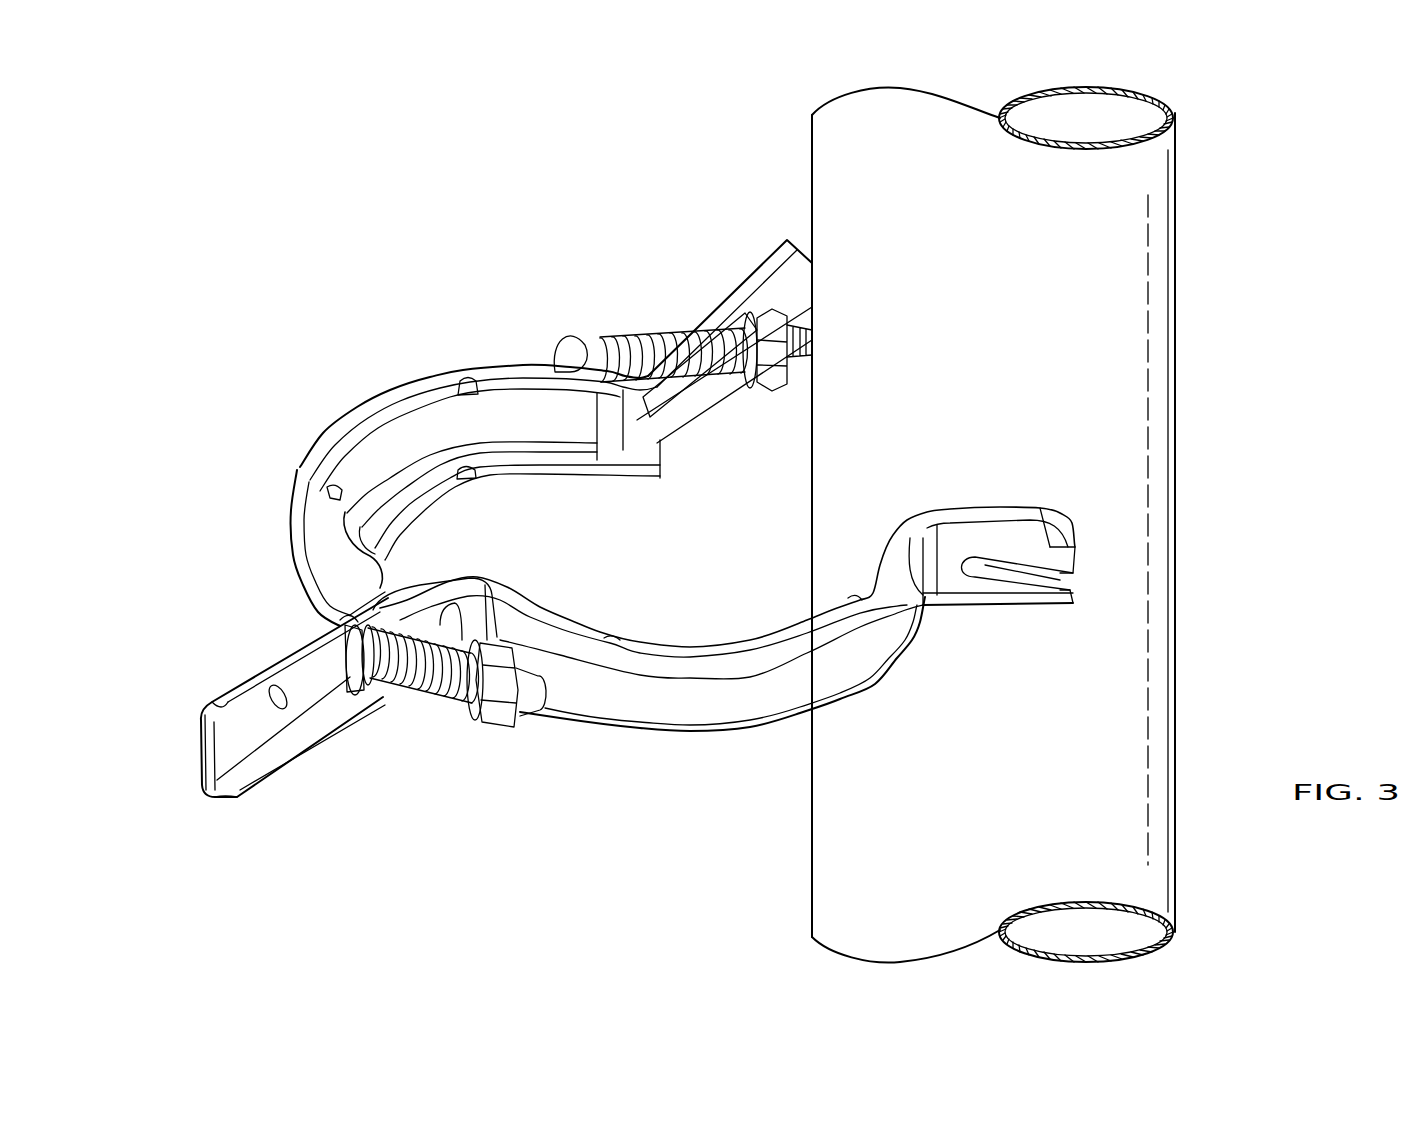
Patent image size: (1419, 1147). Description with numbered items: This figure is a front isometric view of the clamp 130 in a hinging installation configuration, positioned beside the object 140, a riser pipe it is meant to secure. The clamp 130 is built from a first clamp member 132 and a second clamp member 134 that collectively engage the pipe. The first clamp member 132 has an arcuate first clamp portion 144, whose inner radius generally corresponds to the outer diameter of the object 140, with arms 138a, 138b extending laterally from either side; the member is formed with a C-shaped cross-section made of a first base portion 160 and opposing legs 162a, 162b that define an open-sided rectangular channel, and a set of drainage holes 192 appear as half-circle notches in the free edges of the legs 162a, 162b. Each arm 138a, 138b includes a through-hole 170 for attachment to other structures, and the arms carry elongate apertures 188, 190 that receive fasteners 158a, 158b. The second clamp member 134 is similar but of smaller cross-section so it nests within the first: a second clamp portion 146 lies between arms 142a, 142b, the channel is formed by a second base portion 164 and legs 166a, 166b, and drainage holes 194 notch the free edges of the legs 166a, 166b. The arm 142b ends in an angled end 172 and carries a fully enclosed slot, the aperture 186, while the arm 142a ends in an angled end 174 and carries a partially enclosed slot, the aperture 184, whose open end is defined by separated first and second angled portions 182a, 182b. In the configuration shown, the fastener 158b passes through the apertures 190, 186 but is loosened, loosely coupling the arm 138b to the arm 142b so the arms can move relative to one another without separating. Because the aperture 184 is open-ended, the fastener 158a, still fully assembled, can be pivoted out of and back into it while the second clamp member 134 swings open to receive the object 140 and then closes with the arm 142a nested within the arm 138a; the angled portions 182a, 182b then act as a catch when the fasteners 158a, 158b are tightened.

The clamp 130 is at (326, 363).
The first clamp member 132 is at (423, 388).
The second clamp member 134 is at (783, 723).
The arm 138a is at (745, 295).
The arm 138b is at (267, 670).
The object 140 is at (1177, 108).
The arm 142a is at (973, 520).
The arm 142b is at (427, 607).
The first clamp portion 144 is at (318, 437).
The second clamp portion 146 is at (703, 707).
The fastener 158a is at (765, 385).
The fastener 158b is at (497, 723).
The first base portion 160 is at (207, 747).
The leg 162a is at (223, 710).
The leg 162b is at (215, 790).
The second base portion 164 is at (357, 662).
The leg 166a is at (743, 640).
The leg 166b is at (350, 675).
The through-hole 170 is at (747, 327).
The angled end 172 is at (362, 667).
The angled end 174 is at (1050, 510).
The first angled portion 182a is at (1075, 528).
The second angled portion 182b is at (1073, 597).
The aperture 184 is at (983, 560).
The aperture 186 is at (377, 670).
The aperture 188 is at (655, 392).
The aperture 190 is at (343, 660).
The drainage holes 192 is at (465, 383).
The drainage holes 194 is at (853, 605).